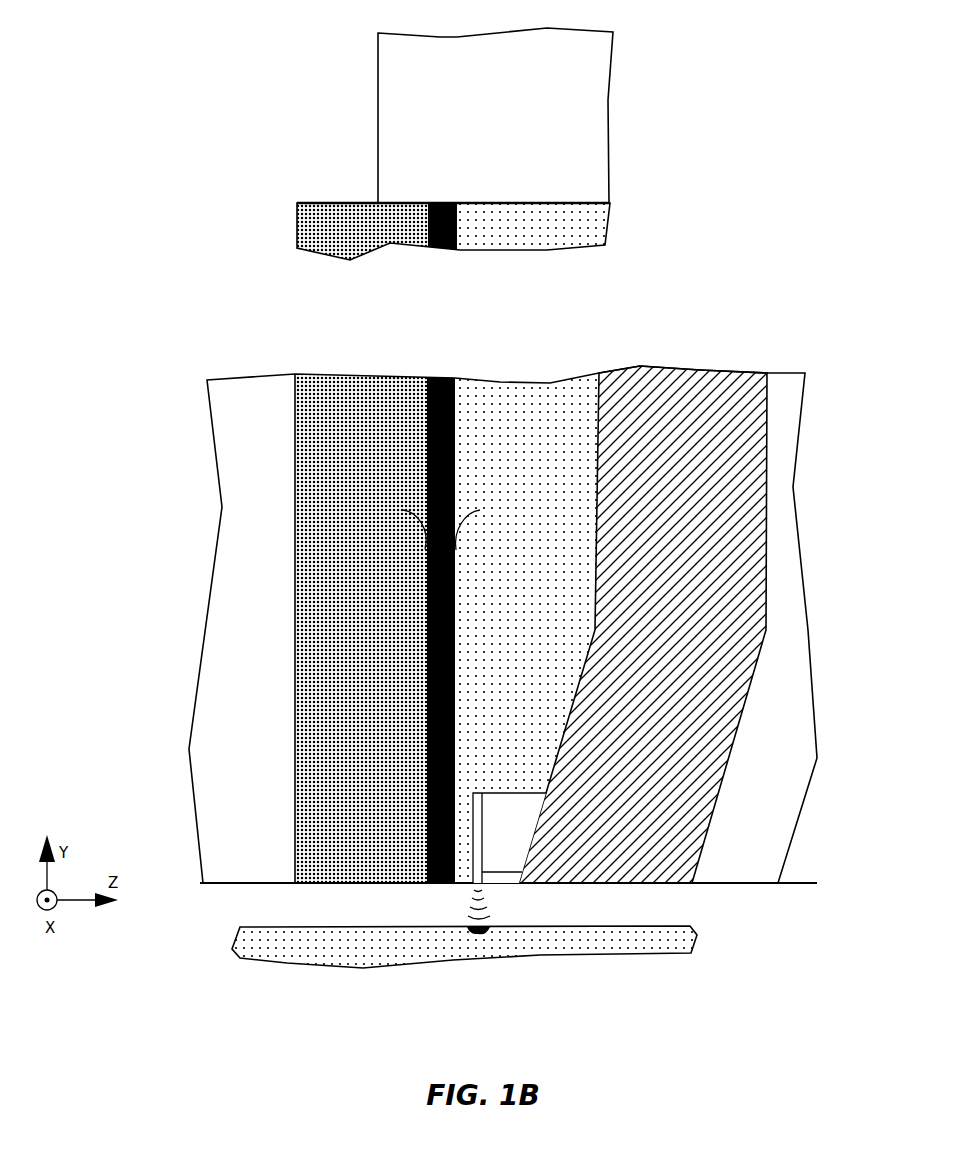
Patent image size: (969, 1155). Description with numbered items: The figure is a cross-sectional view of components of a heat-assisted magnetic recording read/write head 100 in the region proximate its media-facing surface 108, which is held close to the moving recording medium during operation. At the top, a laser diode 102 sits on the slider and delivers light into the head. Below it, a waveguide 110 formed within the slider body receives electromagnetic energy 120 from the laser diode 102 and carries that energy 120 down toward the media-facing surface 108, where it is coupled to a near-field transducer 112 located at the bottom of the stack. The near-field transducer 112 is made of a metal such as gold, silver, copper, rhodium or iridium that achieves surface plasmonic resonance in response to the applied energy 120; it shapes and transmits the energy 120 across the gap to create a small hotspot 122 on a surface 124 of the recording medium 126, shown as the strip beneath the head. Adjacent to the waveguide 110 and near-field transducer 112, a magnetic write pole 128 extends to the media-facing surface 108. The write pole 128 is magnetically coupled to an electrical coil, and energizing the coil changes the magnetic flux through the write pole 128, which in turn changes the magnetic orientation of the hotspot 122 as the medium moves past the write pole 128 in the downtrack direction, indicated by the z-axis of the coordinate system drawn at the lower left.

The HAMR read/write head 100 is at (171, 22).
The laser diode 102 is at (378, 122).
The media-facing surface 108 is at (783, 886).
The waveguide 110 is at (447, 594).
The near-field transducer 112 is at (468, 898).
The electromagnetic energy 120 is at (423, 547).
The hotspot 122 is at (478, 937).
The surface of recording medium 124 is at (645, 927).
The recording medium 126 is at (672, 937).
The magnetic write pole 128 is at (694, 368).